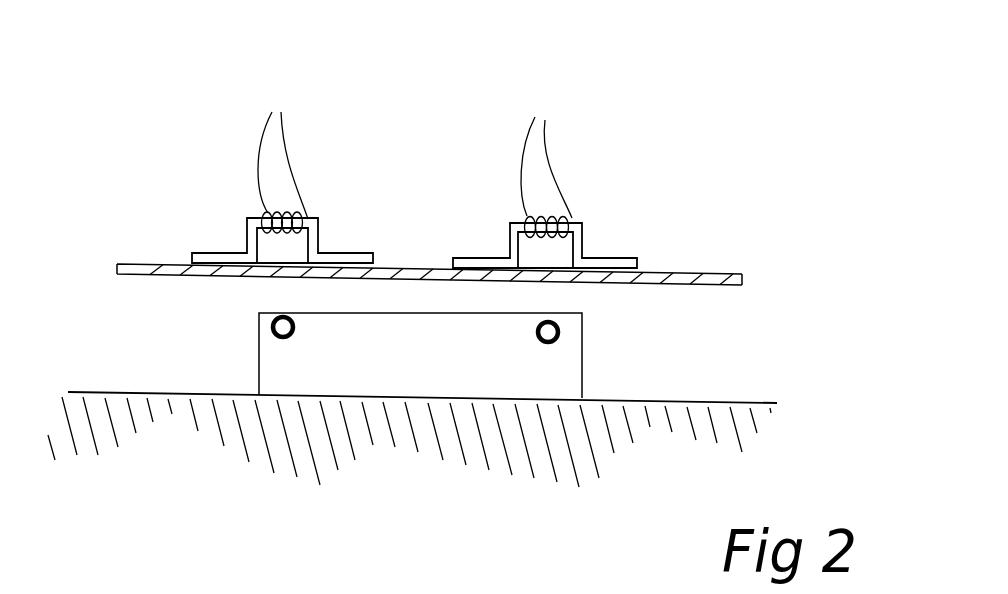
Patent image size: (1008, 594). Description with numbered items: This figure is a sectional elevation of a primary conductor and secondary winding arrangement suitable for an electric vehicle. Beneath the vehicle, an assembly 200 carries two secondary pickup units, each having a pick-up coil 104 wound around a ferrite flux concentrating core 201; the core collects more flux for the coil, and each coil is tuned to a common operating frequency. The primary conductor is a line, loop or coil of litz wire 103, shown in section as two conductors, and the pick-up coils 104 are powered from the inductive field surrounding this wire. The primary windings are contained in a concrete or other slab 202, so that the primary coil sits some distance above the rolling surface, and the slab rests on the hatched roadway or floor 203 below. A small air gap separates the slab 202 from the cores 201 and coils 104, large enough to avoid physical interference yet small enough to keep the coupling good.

The inductive pickup assembly 200 is at (499, 83).
The ferrite flux concentrating core 201 is at (372, 255).
The pick-up coil 104 is at (268, 210).
The litz wire 103 is at (268, 322).
The slab 202 is at (738, 403).
The floor 203 is at (620, 448).